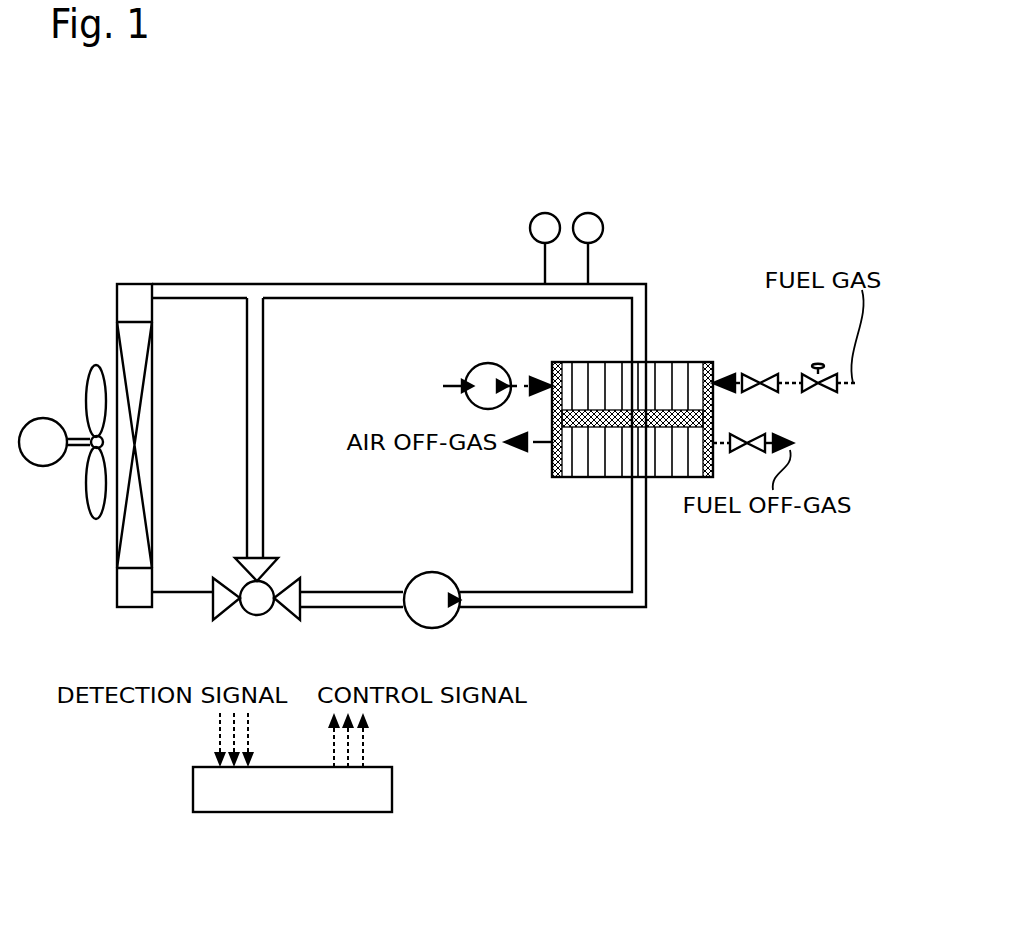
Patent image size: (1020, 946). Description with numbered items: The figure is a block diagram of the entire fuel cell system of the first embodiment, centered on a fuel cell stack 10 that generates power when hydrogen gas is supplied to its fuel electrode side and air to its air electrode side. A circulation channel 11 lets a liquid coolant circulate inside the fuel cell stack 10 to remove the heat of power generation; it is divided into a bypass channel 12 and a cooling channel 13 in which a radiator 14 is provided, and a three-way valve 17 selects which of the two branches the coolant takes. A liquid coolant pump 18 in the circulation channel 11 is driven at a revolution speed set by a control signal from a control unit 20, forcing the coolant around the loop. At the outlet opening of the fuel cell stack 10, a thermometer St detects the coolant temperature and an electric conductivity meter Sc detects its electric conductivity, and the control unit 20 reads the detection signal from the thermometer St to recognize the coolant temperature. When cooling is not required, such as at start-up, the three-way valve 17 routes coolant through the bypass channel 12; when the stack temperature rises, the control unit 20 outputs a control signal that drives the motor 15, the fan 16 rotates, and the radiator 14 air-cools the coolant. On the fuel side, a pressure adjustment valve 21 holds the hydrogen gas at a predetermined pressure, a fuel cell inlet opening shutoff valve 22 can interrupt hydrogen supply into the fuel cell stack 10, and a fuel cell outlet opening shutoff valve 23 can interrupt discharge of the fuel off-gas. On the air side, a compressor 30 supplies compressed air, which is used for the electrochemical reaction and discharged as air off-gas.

The fuel cell stack 10 is at (683, 362).
The circulation channel 11 is at (350, 592).
The bypass channel 12 is at (263, 450).
The cooling channel 13 is at (180, 592).
The radiator 14 is at (152, 360).
The motor 15 is at (43, 418).
The fan 16 is at (90, 365).
The three-way valve 17 is at (257, 616).
The liquid coolant pump 18 is at (432, 628).
The control unit 20 is at (393, 766).
The pressure adjustment valve 21 is at (818, 364).
The fuel cell inlet opening shutoff valve 22 is at (760, 373).
The fuel cell outlet opening shutoff valve 23 is at (748, 434).
The compressor 30 is at (495, 366).
The electric conductivity meter Sc is at (545, 213).
The thermometer St is at (595, 215).